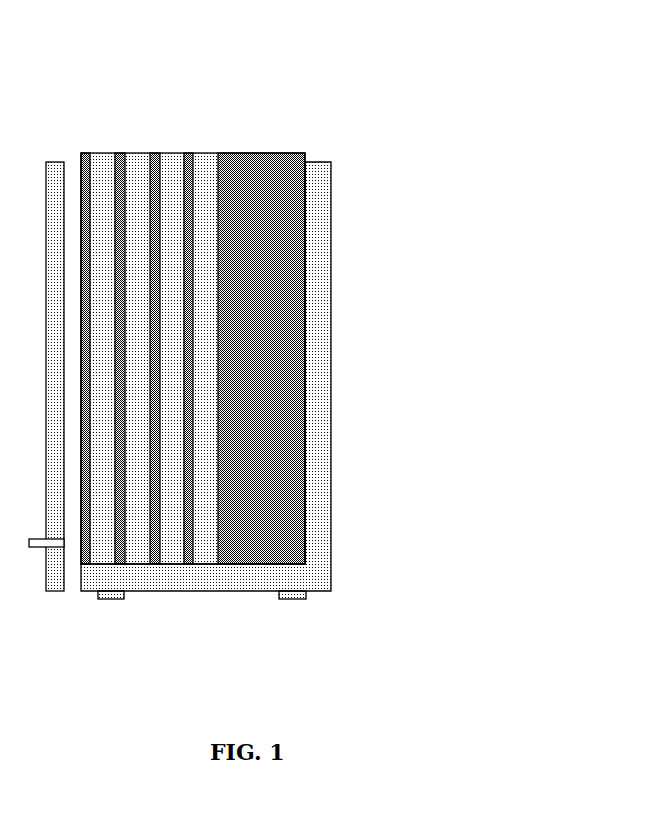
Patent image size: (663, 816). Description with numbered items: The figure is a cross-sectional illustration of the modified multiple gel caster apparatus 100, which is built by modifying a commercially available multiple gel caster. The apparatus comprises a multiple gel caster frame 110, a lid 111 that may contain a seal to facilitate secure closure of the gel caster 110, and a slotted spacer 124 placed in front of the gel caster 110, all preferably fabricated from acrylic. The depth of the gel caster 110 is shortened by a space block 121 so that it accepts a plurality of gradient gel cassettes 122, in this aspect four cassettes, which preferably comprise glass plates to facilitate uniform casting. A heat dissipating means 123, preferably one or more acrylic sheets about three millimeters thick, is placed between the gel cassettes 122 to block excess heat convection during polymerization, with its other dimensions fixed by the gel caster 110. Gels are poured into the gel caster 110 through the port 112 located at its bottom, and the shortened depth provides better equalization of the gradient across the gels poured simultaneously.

The multiple gel caster apparatus 100 is at (255, 311).
The multiple gel caster frame 110 is at (331, 179).
The lid 111 is at (64, 418).
The port 112 is at (64, 548).
The space block 121 is at (306, 222).
The gradient gel cassettes 122 is at (219, 264).
The heat dissipating means 123 is at (193, 316).
The slotted spacer 124 is at (92, 367).